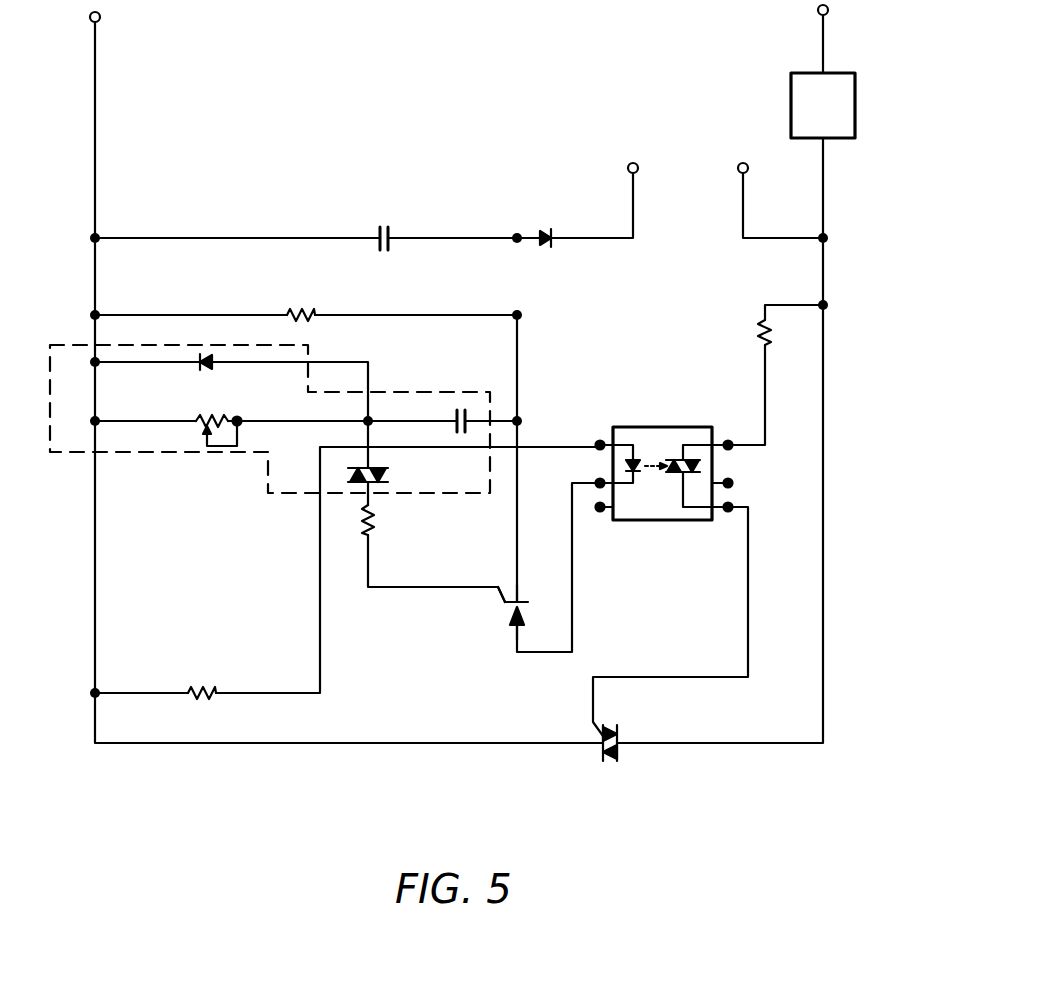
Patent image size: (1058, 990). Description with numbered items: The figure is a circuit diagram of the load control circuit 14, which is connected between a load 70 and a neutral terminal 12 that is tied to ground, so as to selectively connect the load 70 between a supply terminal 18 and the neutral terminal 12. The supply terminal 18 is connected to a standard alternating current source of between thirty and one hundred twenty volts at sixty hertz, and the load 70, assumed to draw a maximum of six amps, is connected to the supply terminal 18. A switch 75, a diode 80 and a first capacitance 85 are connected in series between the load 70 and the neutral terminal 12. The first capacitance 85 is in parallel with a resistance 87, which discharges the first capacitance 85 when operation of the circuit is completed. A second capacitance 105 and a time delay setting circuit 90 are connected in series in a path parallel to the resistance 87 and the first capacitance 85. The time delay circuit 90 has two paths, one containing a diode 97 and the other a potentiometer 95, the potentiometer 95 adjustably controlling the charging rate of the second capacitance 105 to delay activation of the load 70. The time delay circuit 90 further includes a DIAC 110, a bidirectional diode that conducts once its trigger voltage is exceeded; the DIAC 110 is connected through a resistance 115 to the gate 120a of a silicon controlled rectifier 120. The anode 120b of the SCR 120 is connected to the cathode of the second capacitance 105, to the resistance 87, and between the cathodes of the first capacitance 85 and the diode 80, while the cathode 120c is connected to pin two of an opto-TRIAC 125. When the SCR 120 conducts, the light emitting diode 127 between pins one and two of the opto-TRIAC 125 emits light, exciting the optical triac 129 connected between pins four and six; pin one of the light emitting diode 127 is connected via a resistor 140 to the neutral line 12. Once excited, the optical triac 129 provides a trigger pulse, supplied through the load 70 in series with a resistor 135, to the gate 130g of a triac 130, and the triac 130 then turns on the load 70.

The neutral terminal 12 is at (99, 24).
The load control circuit 14 is at (282, 780).
The supply terminal 18 is at (826, 22).
The load 70 is at (856, 108).
The switch 75 is at (695, 176).
The diode 80 is at (546, 229).
The first capacitance 85 is at (383, 256).
The resistance 87 is at (304, 309).
The time delay setting circuit 90 is at (160, 345).
The potentiometer 95 is at (220, 450).
The diode 97 is at (205, 372).
The second capacitance 105 is at (462, 406).
The DIAC 110 is at (355, 487).
The resistance 115 is at (378, 520).
The silicon controlled rectifier 120 is at (521, 600).
The gate 120a is at (495, 596).
The anode 120b is at (530, 600).
The cathode 120c is at (512, 630).
The opto-TRIAC 125 is at (660, 525).
The light emitting diode 127 is at (640, 458).
The optical triac 129 is at (676, 460).
The triac 130 is at (619, 760).
The gate 130g is at (592, 712).
The resistor 135 is at (760, 328).
The resistor 140 is at (203, 688).